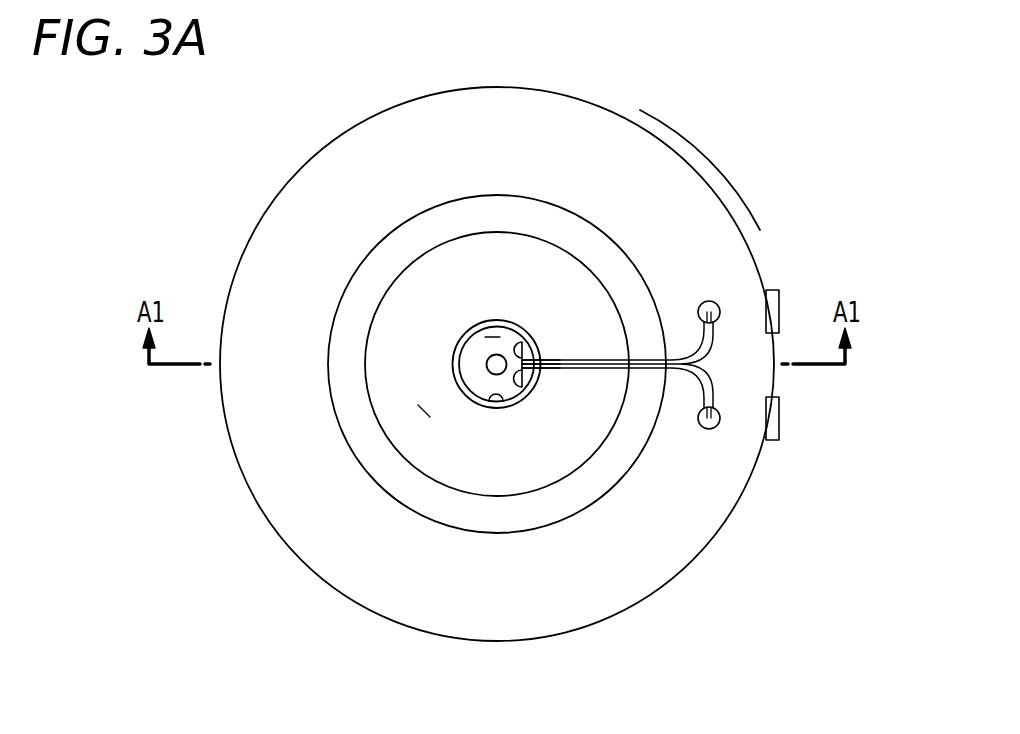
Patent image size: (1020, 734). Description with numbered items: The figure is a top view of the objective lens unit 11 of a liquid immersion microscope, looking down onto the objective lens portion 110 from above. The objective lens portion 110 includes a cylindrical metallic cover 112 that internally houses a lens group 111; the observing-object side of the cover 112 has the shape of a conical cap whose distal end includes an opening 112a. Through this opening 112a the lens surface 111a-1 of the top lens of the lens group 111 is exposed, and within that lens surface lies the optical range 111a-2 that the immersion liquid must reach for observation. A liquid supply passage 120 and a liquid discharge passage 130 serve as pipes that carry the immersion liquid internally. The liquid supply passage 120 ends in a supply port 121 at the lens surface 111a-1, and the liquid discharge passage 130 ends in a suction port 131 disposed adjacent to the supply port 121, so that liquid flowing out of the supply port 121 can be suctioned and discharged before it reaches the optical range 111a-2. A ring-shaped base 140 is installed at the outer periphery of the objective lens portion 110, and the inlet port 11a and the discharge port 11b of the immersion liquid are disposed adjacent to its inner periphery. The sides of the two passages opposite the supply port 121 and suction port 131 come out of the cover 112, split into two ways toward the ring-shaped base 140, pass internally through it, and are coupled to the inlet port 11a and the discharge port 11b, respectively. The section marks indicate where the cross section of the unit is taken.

The objective lens unit 11 is at (122, 108).
The objective lens portion 110 is at (403, 217).
The lens group 111 is at (512, 323).
The lens surface 111a-1 is at (493, 337).
The optical range 111a-2 is at (489, 357).
The cover 112 is at (424, 411).
The opening 112a is at (490, 401).
The liquid supply passage 120 is at (674, 372).
The supply port 121 is at (522, 388).
The liquid discharge passage 130 is at (674, 357).
The suction port 131 is at (525, 332).
The ring-shaped base 140 is at (707, 180).
The inlet port 11a is at (781, 424).
The discharge port 11b is at (783, 298).